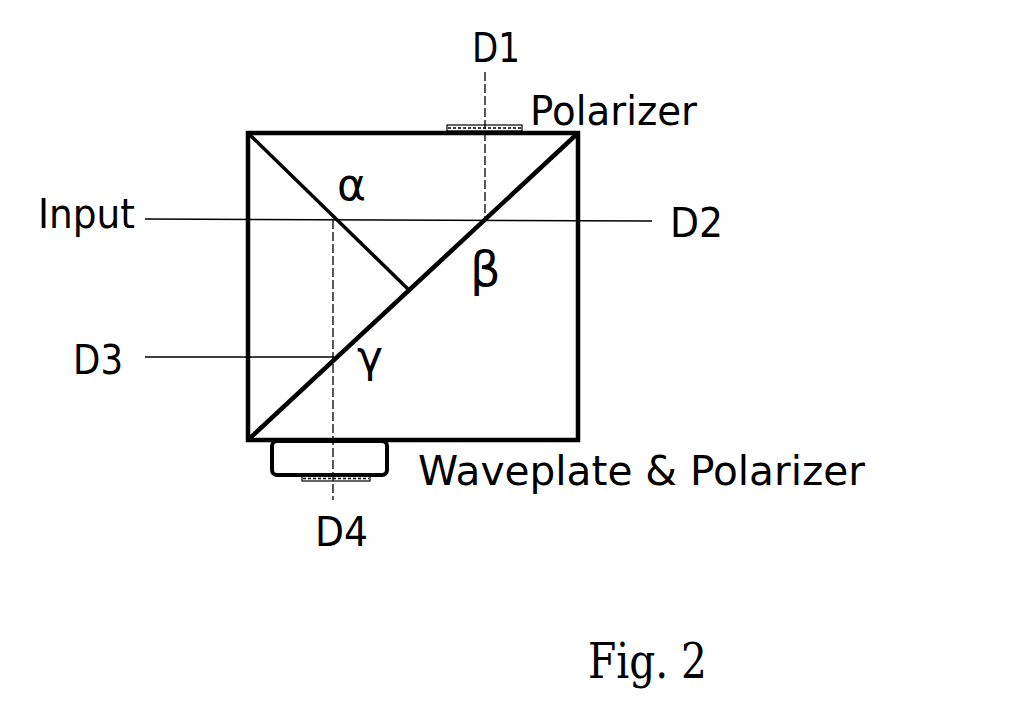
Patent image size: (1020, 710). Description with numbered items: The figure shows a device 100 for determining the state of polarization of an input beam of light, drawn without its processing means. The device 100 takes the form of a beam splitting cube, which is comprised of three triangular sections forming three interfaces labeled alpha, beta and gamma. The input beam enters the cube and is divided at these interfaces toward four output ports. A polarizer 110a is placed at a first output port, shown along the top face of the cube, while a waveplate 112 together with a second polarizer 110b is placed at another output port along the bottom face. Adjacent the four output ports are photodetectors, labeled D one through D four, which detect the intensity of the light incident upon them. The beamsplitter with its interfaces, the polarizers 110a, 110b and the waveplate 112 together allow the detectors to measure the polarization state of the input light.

The device 100 is at (687, 357).
The polarizer 110a is at (460, 125).
The polarizer 110b is at (300, 478).
The waveplate 112 is at (270, 458).